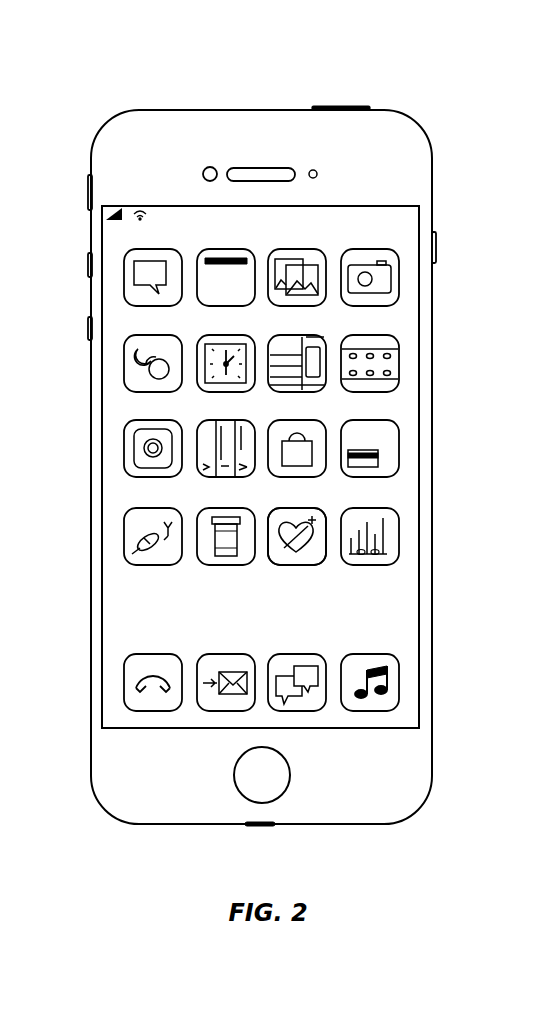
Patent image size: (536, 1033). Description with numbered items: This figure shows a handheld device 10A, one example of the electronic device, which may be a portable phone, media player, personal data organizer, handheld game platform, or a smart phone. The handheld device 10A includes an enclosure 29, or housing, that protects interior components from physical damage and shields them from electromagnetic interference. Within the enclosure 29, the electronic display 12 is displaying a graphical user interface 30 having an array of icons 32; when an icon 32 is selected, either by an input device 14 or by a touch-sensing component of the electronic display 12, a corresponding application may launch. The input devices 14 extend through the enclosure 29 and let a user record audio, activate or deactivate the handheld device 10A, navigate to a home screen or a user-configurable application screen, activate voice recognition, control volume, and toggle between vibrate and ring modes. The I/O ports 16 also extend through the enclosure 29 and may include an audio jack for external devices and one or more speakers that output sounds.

The handheld device 10A is at (80, 88).
The electronic display 12 is at (421, 502).
The input devices 14 is at (339, 106).
The I/O ports 16 is at (157, 826).
The enclosure 29 is at (433, 172).
The graphical user interface 30 is at (401, 407).
The icon 32 is at (296, 566).